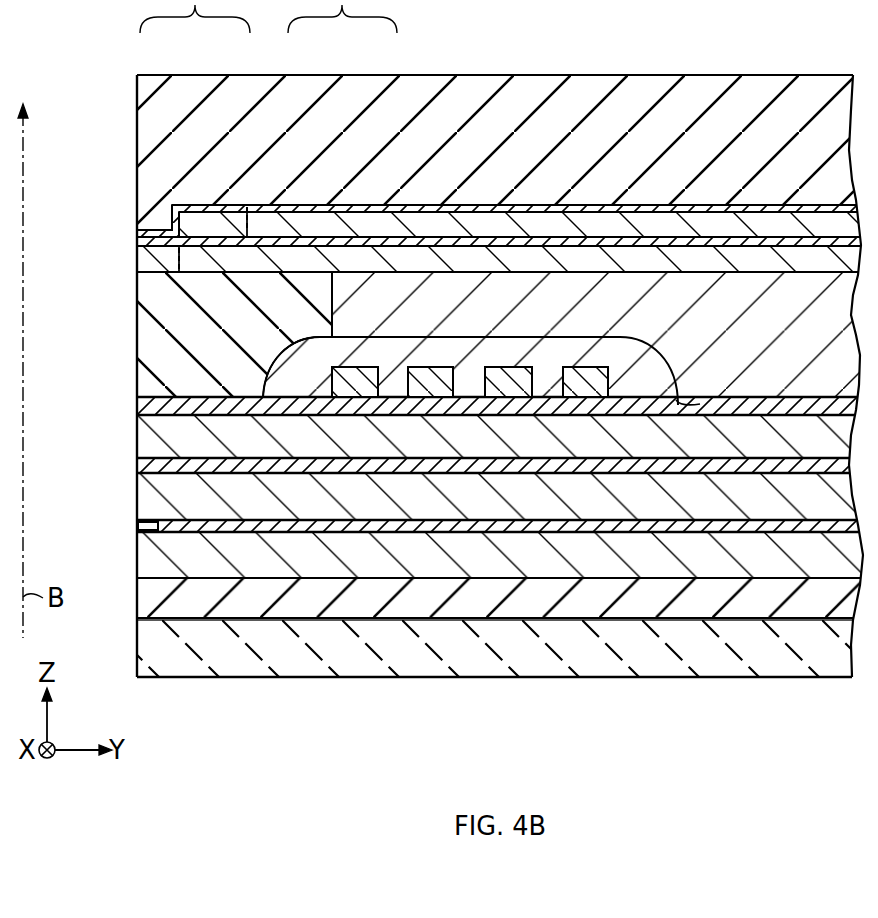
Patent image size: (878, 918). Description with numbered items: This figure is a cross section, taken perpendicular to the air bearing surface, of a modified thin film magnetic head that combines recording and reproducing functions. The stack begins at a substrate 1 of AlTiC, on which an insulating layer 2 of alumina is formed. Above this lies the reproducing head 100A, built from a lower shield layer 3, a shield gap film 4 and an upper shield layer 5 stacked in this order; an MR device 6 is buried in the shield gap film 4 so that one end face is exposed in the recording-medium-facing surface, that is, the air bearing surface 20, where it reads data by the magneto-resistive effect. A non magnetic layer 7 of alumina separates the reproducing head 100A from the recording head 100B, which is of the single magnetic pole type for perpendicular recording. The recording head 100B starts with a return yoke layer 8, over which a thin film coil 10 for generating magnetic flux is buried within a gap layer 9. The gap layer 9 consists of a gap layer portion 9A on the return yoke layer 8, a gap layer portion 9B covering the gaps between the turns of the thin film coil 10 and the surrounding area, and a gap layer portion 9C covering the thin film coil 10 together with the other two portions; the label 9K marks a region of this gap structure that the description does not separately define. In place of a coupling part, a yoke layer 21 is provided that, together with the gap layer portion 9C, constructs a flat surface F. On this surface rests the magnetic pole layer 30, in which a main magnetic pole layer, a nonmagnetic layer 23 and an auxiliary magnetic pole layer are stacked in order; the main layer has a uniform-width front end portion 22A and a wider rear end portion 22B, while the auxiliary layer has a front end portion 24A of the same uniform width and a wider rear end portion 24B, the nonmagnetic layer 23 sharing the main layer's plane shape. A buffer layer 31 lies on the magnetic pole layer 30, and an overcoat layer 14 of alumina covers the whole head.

The substrate 1 is at (812, 655).
The insulating layer 2 is at (755, 600).
The lower shield layer 3 is at (705, 557).
The shield gap film 4 is at (648, 527).
The upper shield layer 5 is at (588, 497).
The MR device 6 is at (147, 533).
The non magnetic layer 7 is at (530, 470).
The return yoke layer 8 is at (475, 438).
The gap layer 9 is at (503, 523).
The gap layer portion 9A is at (353, 407).
The gap layer portion 9B is at (302, 382).
The gap layer portion 9C is at (228, 356).
The kink portion of core 9K is at (688, 406).
The thin film coil 10 is at (434, 383).
The overcoat layer 14 is at (818, 108).
The air bearing surface 20 is at (134, 111).
The yoke layer 21 is at (620, 310).
The front end portion 22A is at (157, 253).
The rear end portion 22B is at (198, 257).
The nonmagnetic layer 23 is at (437, 255).
The front end portion 24A is at (240, 213).
The rear end portion 24B is at (375, 217).
The magnetic pole layer 30 is at (495, 195).
The buffer layer 31 is at (753, 207).
The reproducing head 100A is at (128, 473).
The recording head 100B is at (128, 207).
The flat surface F is at (565, 268).